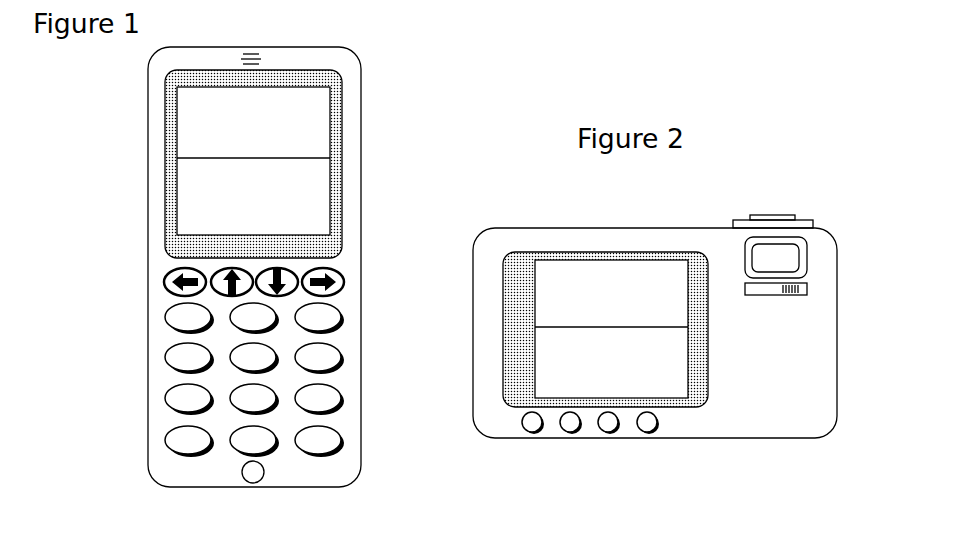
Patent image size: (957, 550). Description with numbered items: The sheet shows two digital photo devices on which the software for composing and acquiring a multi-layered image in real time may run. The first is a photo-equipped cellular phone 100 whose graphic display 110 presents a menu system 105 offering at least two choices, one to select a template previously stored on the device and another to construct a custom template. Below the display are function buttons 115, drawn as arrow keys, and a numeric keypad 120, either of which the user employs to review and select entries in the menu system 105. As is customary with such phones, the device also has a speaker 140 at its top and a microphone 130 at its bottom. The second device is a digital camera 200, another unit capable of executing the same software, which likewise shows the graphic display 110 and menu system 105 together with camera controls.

In FIG. 1, the cellular phone 100 is at (378, 81).
In FIG. 1, the menu system 105 is at (167, 150).
In FIG. 2, the menu system 105 is at (690, 380).
In FIG. 1, the graphic display 110 is at (343, 193).
In FIG. 2, the graphic display 110 is at (709, 336).
In FIG. 1, the function buttons 115 is at (218, 270).
In FIG. 1, the numeric keypad 120 is at (370, 280).
In FIG. 1, the microphone 130 is at (255, 483).
In FIG. 1, the speaker 140 is at (251, 50).
In FIG. 2, the digital camera 200 is at (744, 198).